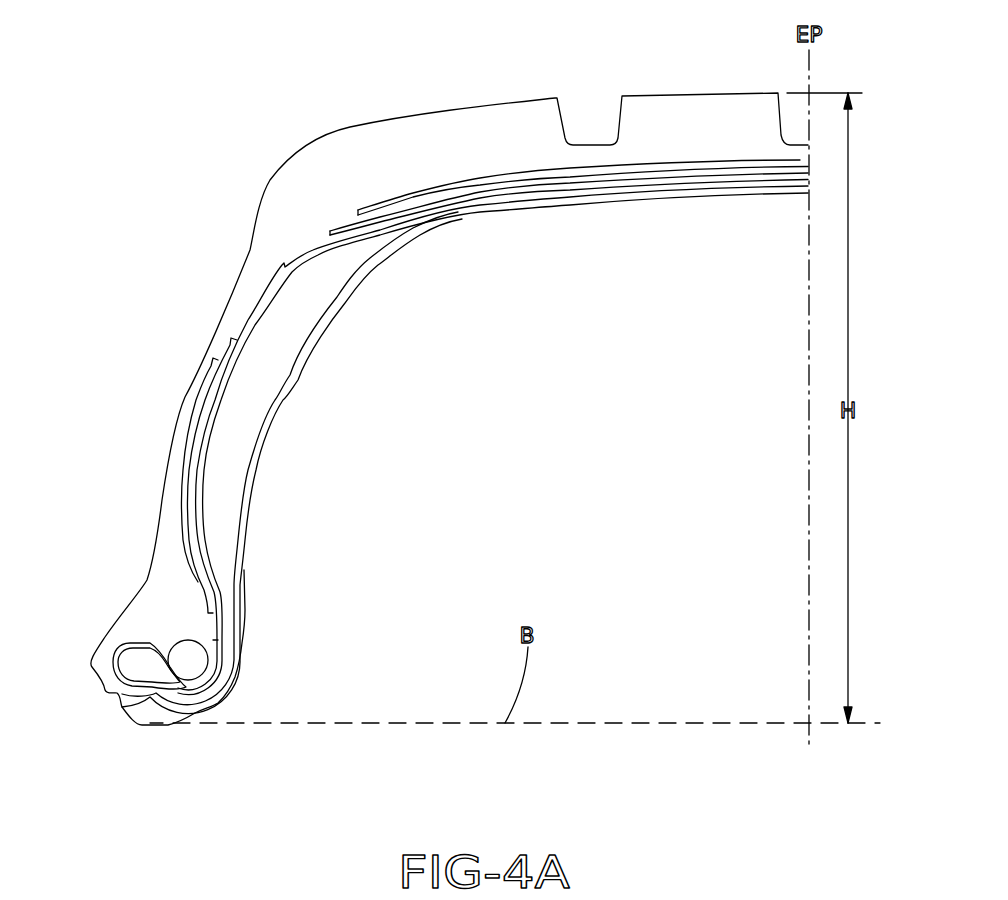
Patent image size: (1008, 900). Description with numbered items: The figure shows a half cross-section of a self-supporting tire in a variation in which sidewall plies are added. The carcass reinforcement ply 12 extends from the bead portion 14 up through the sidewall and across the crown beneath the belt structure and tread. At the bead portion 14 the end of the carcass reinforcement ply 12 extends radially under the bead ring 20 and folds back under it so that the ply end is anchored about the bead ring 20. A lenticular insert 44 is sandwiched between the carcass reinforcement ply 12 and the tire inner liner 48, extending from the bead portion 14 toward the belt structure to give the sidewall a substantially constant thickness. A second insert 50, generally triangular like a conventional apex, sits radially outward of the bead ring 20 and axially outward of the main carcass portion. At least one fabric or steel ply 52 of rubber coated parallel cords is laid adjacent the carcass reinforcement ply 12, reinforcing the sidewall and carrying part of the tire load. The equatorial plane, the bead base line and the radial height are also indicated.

The carcass reinforcement ply 12 is at (252, 317).
The bead portion 14 is at (115, 707).
The bead ring 20 is at (186, 652).
The insert 44 is at (250, 397).
The tire inner liner 48 is at (342, 295).
The second insert 50 is at (172, 595).
The ply 52 is at (183, 418).